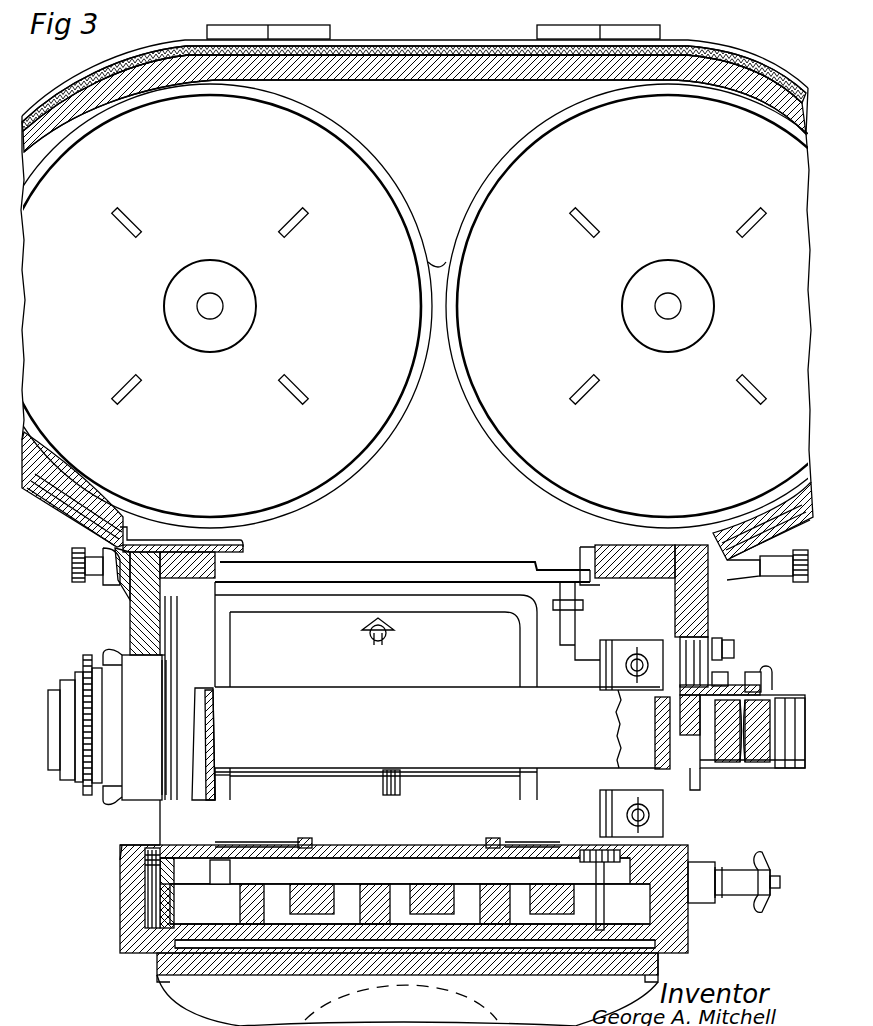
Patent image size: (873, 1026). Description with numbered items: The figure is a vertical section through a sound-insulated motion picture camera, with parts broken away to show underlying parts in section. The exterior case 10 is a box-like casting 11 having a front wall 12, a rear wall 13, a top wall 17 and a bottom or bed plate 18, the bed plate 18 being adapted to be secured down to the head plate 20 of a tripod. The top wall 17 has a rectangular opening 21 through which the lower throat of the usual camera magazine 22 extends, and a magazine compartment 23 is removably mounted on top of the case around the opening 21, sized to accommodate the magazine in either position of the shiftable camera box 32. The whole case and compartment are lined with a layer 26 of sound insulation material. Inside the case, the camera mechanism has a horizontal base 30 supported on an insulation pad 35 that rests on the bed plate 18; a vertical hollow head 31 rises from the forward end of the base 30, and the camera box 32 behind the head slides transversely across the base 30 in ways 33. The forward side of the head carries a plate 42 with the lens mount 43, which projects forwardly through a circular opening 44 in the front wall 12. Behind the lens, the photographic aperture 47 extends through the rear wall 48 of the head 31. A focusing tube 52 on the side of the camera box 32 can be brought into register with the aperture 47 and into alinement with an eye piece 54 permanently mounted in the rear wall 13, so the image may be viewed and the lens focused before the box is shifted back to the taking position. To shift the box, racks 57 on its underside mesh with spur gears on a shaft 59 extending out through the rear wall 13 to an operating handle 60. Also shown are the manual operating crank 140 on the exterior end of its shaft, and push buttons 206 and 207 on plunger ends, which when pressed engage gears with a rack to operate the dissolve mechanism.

The exterior case 10 is at (120, 611).
The box-like casting 11 is at (112, 906).
The front wall 12 is at (130, 848).
The rear wall 13 is at (709, 620).
The top wall 17 is at (172, 546).
The bed plate 18 is at (520, 935).
The head plate 20 is at (430, 975).
The rectangular opening 21 is at (596, 560).
The camera magazine 22 is at (412, 170).
The magazine compartment 23 is at (745, 55).
The layer of sound insulation material 26 is at (430, 72).
The base or bed plate 30 is at (440, 845).
The head portion 31 is at (184, 698).
The camera box 32 is at (368, 588).
The ways 33 is at (546, 818).
The insulation pad 35 is at (305, 905).
The plate 42 is at (173, 655).
The lens mount 43 is at (107, 727).
The circular opening 44 is at (125, 792).
The photographic aperture 47 is at (216, 728).
The rear wall of head 48 is at (215, 778).
The focusing tube 52 is at (441, 704).
The eye piece 54 is at (750, 766).
The racks 57 is at (304, 838).
The shaft 59 is at (733, 870).
The operating handle 60 is at (770, 856).
The manual operating crank 140 is at (768, 689).
The push button 206 is at (729, 684).
The push button 207 is at (735, 649).